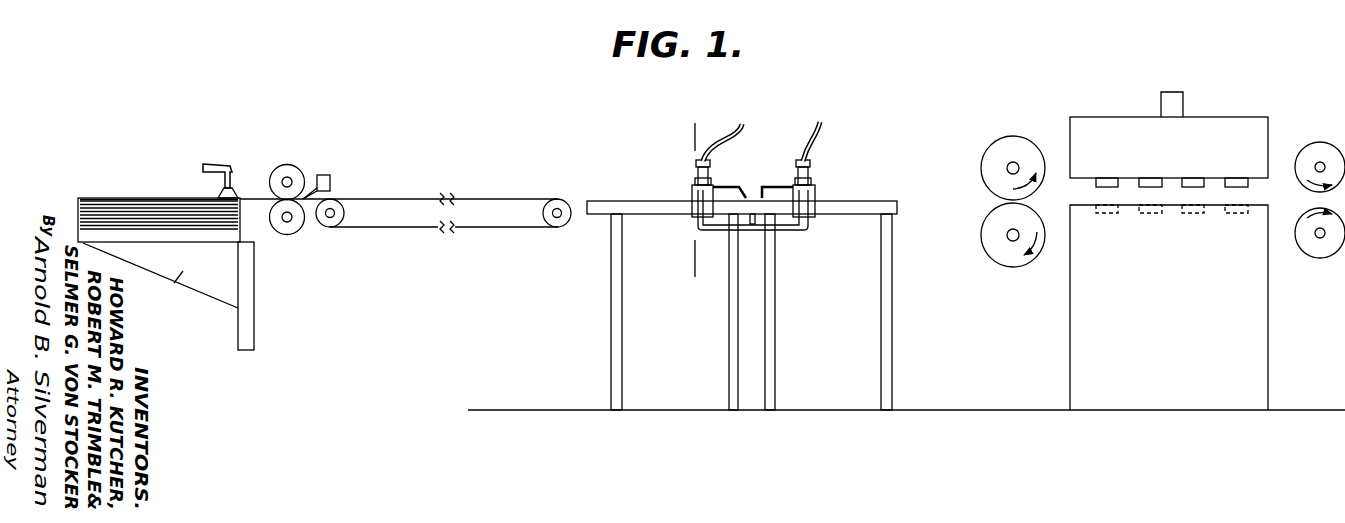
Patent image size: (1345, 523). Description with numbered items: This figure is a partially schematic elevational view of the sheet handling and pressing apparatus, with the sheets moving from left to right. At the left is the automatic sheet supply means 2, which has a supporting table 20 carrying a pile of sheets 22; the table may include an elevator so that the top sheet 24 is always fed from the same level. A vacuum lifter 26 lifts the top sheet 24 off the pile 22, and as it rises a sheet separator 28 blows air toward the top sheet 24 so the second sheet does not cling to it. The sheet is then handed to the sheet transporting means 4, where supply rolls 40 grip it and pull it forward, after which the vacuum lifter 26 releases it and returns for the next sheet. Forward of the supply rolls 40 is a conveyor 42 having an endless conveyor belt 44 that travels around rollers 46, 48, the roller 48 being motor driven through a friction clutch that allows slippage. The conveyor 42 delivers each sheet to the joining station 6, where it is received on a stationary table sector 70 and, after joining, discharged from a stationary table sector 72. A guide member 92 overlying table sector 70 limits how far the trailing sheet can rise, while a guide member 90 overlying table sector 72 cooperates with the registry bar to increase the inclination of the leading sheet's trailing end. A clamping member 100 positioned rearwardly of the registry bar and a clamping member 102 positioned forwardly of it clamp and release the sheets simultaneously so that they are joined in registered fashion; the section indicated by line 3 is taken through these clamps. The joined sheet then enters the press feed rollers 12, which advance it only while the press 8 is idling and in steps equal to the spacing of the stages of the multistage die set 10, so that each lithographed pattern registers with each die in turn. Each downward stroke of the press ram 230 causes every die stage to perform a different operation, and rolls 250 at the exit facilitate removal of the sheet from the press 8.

The automatic sheet supply means 2 is at (168, 186).
The section line 3- 3 is at (712, 137).
The sheet transporting means 4 is at (450, 205).
The joining station 6 is at (744, 259).
The press 8 is at (1163, 233).
The multistage die set 10 is at (1235, 205).
The press feed rollers 12 is at (1010, 130).
The supporting table 20 is at (168, 296).
The pile of sheets 22 is at (98, 208).
The top sheet 24 is at (128, 200).
The vacuum lifter 26 is at (238, 188).
The sheet separator 28 is at (331, 175).
The supply rolls 40 is at (295, 165).
The conveyor 42 is at (383, 196).
The endless conveyor belt 44 is at (507, 228).
The roller 46 is at (343, 221).
The roller 48 is at (543, 224).
The stationary table sector 70 is at (605, 200).
The stationary table sector 72 is at (870, 200).
The guide member 90 is at (762, 197).
The guide member 92 is at (745, 197).
The clamping member 100 is at (689, 185).
The clamping member 102 is at (818, 184).
The press ram 230 is at (1105, 127).
The rolls 250 is at (1308, 132).